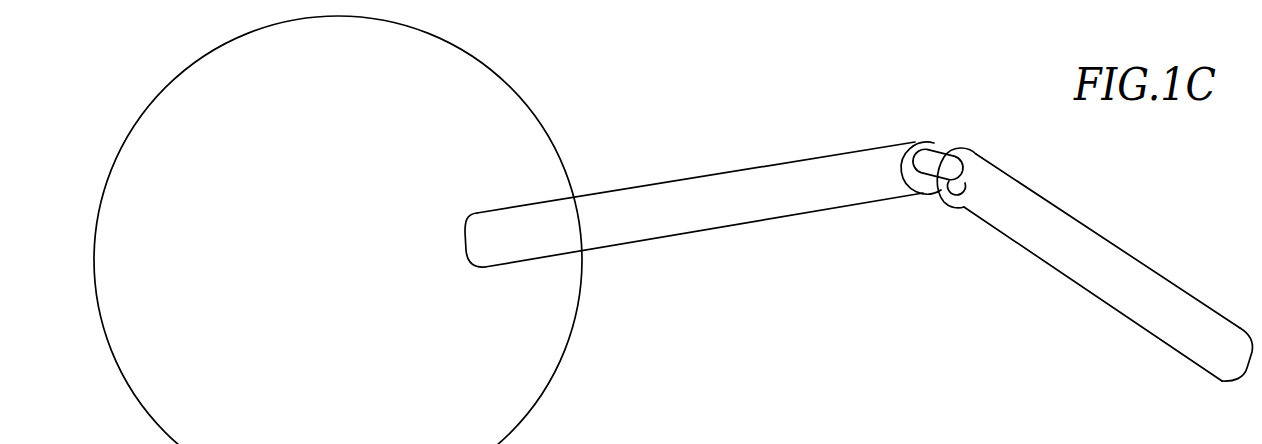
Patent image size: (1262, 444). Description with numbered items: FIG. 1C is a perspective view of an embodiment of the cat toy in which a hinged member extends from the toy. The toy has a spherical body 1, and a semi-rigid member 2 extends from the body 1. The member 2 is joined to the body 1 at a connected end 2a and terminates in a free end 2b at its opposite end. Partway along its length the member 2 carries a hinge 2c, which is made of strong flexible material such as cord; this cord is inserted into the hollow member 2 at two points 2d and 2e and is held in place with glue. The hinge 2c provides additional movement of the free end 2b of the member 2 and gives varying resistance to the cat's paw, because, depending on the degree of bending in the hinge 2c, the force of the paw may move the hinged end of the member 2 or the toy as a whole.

The spherical body 1 is at (200, 113).
The semi-rigid member 2 is at (740, 182).
The connected end 2a is at (480, 242).
The free end 2b is at (1248, 367).
The hinge 2c is at (925, 165).
The point 2d is at (907, 188).
The point 2e is at (963, 207).